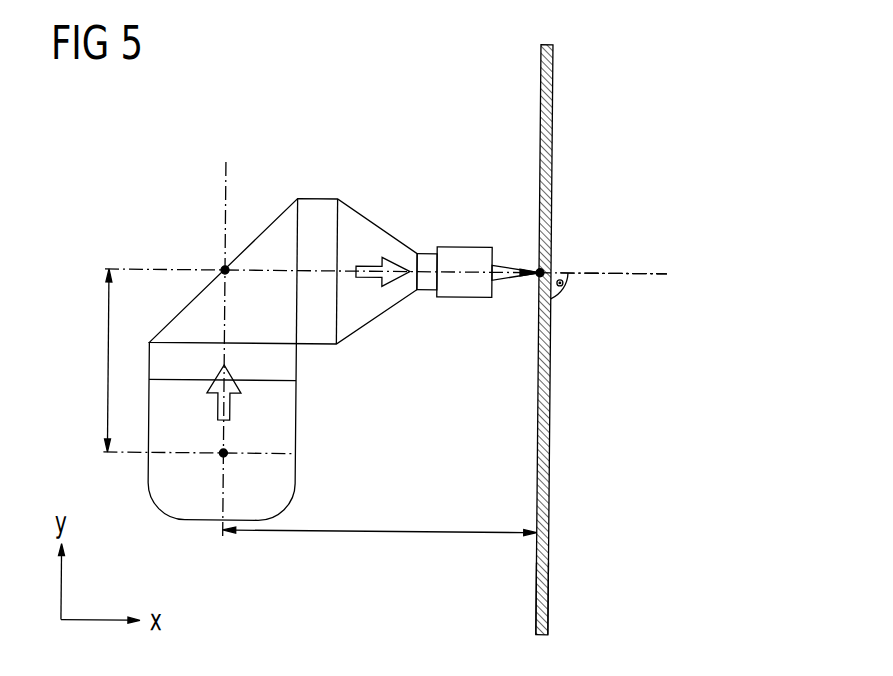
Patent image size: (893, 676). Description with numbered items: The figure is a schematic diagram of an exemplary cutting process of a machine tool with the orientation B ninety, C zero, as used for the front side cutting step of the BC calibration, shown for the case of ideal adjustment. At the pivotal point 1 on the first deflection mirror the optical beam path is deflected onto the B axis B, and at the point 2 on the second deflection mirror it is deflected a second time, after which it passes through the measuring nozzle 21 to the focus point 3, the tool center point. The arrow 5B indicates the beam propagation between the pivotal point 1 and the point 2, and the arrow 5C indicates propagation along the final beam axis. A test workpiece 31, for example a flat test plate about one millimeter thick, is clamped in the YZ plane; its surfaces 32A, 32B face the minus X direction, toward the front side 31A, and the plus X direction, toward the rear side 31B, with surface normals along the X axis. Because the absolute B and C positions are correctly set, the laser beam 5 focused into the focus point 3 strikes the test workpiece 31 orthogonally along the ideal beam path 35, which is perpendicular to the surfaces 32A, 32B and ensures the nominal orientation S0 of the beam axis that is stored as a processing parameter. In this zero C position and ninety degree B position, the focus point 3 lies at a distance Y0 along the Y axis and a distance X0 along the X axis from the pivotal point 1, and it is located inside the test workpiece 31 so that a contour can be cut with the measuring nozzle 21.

The pivotal point 1 is at (220, 457).
The point 2 is at (221, 267).
The focus point 3 is at (551, 266).
The laser beam 5 is at (512, 260).
The arrow 5B is at (232, 406).
The arrow 5C is at (371, 262).
The measuring nozzle 21 is at (465, 296).
The test workpiece 31 is at (552, 70).
The front side 31A is at (358, 118).
The rear side 31B is at (668, 95).
The surface 32A is at (539, 603).
The surface 32B is at (551, 612).
The ideal beam path 35 is at (636, 273).
The B axis B is at (225, 182).
The nominal orientation S0 is at (688, 249).
The distance X0 is at (378, 527).
The distance Y0 is at (108, 362).